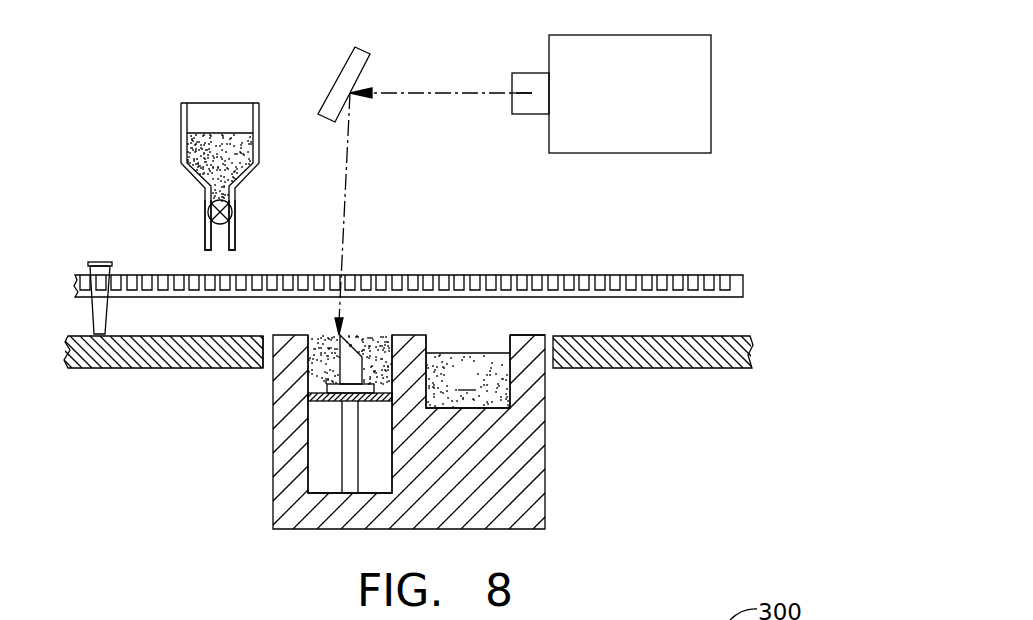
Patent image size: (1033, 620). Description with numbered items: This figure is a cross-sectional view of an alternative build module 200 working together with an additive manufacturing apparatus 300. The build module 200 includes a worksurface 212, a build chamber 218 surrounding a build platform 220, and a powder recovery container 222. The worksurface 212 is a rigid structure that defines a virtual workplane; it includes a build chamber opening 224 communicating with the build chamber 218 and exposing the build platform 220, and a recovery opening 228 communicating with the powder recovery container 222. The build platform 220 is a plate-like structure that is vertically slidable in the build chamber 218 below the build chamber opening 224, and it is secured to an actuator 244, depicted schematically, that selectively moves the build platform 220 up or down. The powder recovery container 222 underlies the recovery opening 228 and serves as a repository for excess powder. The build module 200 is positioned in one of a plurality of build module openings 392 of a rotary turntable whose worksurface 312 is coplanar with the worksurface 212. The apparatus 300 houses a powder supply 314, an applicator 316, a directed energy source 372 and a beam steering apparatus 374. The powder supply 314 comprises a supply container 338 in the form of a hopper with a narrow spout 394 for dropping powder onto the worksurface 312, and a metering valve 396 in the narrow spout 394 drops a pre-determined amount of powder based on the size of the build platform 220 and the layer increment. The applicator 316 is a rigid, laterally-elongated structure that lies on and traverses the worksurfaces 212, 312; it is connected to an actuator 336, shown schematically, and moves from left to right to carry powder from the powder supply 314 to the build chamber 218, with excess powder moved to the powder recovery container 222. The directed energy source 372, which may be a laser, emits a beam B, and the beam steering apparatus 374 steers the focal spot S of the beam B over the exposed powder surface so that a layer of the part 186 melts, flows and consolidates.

The additive manufacturing apparatus 300 is at (134, 54).
The directed energy source 372 is at (660, 72).
The beam steering apparatus 374 is at (345, 72).
The beam B is at (347, 183).
The powder supply 314 is at (172, 128).
The supply container 338 is at (258, 148).
The metering valve 396 is at (208, 211).
The narrow spout 394 is at (235, 233).
The applicator 316 is at (97, 270).
The actuator 336 is at (600, 277).
The worksurface 312 is at (668, 336).
The build chamber opening 224 is at (318, 340).
The focal spot S is at (340, 334).
The build chamber 218 is at (386, 334).
The recovery opening 228 is at (432, 340).
The powder recovery container 222 is at (503, 340).
The worksurface 212 is at (517, 337).
The part 186 is at (347, 368).
The build module opening 392 is at (266, 352).
The build platform 220 is at (325, 403).
The actuator 244 is at (352, 478).
The build module 200 is at (568, 447).